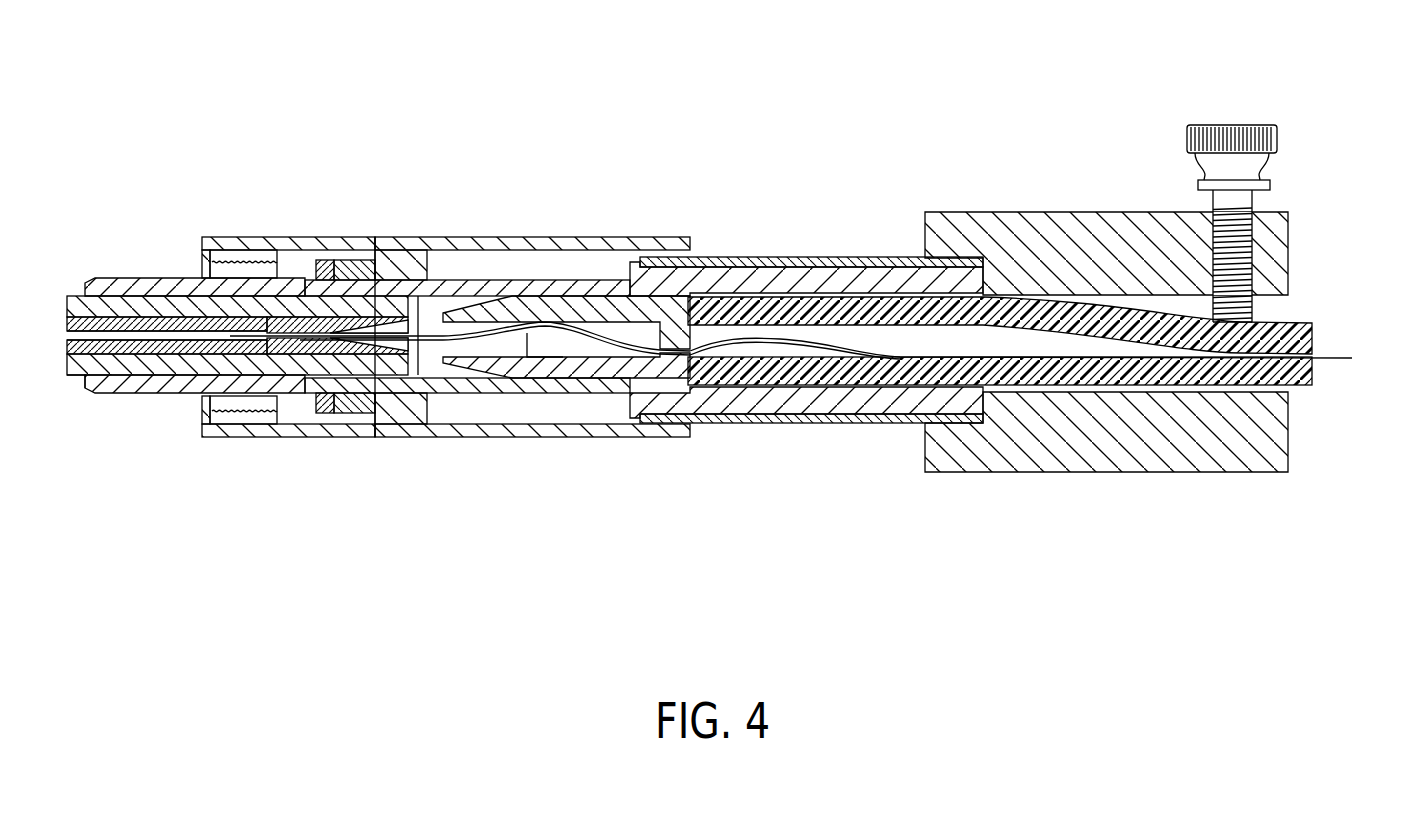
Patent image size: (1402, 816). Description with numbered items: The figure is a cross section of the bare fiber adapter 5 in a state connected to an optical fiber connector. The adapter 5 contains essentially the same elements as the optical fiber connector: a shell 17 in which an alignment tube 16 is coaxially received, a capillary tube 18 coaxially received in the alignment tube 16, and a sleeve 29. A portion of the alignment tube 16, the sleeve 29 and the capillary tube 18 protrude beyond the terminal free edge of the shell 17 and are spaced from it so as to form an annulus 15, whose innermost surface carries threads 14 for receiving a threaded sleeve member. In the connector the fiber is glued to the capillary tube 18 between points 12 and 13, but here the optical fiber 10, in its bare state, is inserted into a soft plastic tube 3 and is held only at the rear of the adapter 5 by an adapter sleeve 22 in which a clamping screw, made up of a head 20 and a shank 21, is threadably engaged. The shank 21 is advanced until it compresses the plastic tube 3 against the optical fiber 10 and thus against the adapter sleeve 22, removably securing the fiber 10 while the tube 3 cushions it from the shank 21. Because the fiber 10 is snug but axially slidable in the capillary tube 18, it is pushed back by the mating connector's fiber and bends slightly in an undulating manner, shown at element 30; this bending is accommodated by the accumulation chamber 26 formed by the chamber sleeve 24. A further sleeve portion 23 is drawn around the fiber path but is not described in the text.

The bare fiber adapter 5 is at (846, 100).
The plastic tube 3 is at (1312, 326).
The optical fiber 10 is at (1352, 358).
The point 12 is at (67, 330).
The point 13 is at (223, 330).
The threads 14 is at (228, 406).
The annulus 15 is at (255, 237).
The alignment tube 16 is at (150, 278).
The shell 17 is at (600, 237).
The capillary tube 18 is at (67, 347).
The head 20 is at (1277, 138).
The shank 21 is at (1243, 262).
The adapter sleeve 22 is at (1062, 212).
The sleeve 23 is at (788, 257).
The chamber sleeve 24 is at (480, 305).
The accumulation chamber 26 is at (650, 345).
The sleeve 29 is at (68, 380).
The undulating bend 30 is at (558, 333).